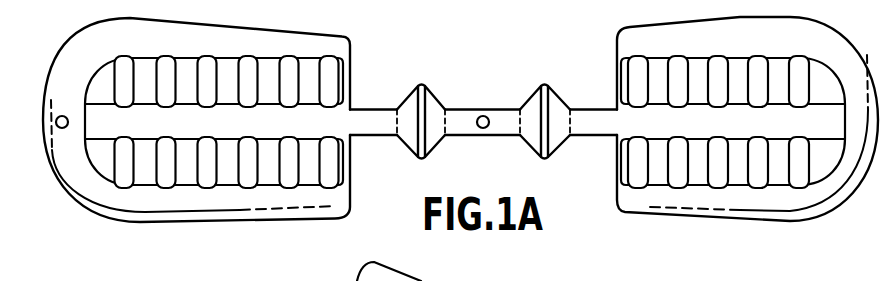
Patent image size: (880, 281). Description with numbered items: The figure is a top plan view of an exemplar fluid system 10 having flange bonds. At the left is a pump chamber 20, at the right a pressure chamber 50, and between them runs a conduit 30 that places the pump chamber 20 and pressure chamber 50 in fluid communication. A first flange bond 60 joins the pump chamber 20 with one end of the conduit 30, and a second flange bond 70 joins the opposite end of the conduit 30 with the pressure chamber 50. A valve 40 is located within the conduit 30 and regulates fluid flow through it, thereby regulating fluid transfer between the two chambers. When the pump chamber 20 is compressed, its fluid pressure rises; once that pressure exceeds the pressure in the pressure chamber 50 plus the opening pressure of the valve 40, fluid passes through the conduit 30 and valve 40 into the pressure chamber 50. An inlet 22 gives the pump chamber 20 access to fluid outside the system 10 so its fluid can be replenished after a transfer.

The fluid system 10 is at (178, 246).
The pump chamber 20 is at (232, 222).
The inlet 22 is at (62, 115).
The conduit 30 is at (505, 135).
The valve 40 is at (483, 115).
The pressure chamber 50 is at (759, 222).
The first flange bond 60 is at (422, 84).
The second flange bond 70 is at (545, 84).